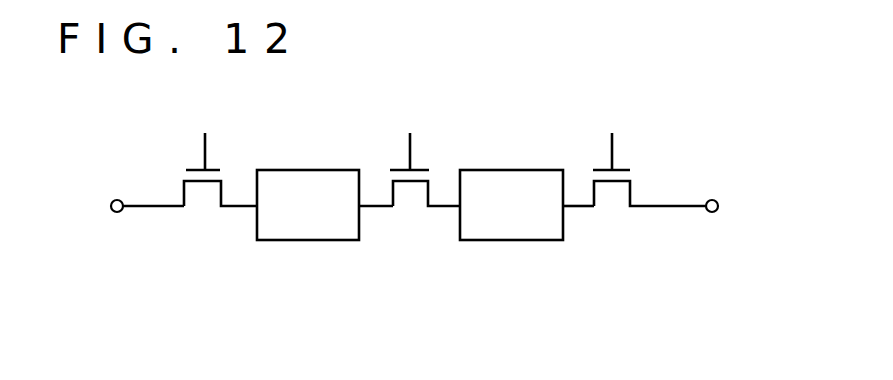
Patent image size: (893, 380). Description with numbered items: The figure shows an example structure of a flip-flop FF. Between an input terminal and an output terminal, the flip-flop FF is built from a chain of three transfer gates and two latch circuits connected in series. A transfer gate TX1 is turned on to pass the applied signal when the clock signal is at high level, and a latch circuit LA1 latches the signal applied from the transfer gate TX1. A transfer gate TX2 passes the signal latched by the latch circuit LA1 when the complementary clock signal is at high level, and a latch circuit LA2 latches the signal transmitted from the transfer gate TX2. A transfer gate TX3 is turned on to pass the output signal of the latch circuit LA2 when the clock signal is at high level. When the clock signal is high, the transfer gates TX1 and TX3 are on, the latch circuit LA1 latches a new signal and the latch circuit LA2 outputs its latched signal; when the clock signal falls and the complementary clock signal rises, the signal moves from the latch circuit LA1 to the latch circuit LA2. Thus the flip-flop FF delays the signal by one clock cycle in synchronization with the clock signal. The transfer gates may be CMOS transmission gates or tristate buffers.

The transfer gate TX1 is at (207, 195).
The transfer gate TX2 is at (412, 195).
The transfer gate TX3 is at (613, 195).
The latch circuit LA1 is at (316, 240).
The latch circuit LA2 is at (523, 240).
The flip-flop FF is at (717, 328).